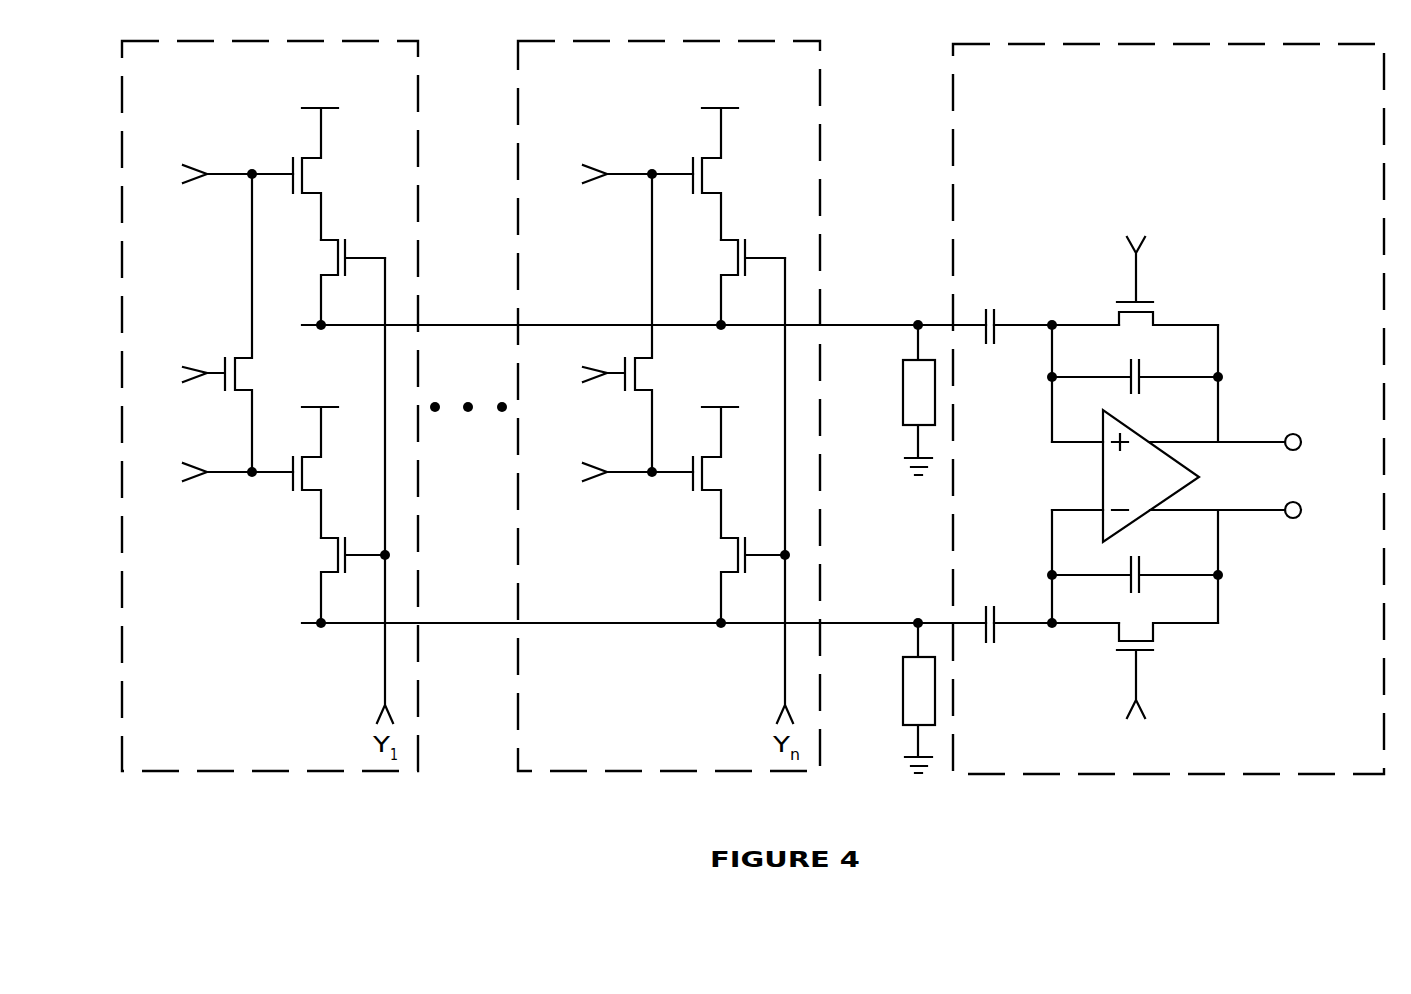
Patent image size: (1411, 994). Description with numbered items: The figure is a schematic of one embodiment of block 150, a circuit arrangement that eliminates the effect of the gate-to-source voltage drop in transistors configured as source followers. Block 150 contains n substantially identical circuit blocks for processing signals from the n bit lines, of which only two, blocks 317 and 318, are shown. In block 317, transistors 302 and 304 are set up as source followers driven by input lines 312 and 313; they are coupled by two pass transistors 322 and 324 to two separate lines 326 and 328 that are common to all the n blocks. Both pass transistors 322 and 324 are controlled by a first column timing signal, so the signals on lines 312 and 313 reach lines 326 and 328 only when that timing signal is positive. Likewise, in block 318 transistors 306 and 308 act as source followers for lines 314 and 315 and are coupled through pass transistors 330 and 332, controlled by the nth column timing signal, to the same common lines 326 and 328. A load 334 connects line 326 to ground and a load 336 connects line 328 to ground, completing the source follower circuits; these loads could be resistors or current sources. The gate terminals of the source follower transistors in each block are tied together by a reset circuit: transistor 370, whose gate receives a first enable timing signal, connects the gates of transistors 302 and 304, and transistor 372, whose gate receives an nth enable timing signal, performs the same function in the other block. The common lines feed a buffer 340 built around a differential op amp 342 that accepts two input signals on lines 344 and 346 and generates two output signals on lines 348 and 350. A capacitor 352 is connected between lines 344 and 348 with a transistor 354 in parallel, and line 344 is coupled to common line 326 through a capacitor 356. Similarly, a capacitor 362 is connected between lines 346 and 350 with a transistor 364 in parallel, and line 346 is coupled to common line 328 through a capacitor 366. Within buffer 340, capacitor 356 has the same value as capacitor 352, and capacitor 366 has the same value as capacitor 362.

The block 150 is at (1300, 808).
The transistor 302 is at (293, 158).
The transistor 304 is at (293, 467).
The transistor 306 is at (693, 158).
The transistor 308 is at (693, 485).
The line 312 is at (220, 173).
The line 313 is at (218, 480).
The line 314 is at (620, 173).
The line 315 is at (618, 480).
The block 317 is at (360, 771).
The block 318 is at (760, 771).
The pass transistor 322 is at (327, 240).
The pass transistor 324 is at (320, 550).
The common line 326 is at (455, 323).
The common line 328 is at (455, 621).
The pass transistor 330 is at (743, 250).
The pass transistor 332 is at (747, 550).
The load 334 is at (903, 392).
The load 336 is at (903, 682).
The buffer 340 is at (1135, 774).
The differential op amp 342 is at (1128, 422).
The line 344 is at (1070, 442).
The line 346 is at (1070, 510).
The line 348 is at (1250, 442).
The line 350 is at (1250, 510).
The capacitor 352 is at (1142, 375).
The transistor 354 is at (1143, 300).
The capacitor 356 is at (997, 337).
The capacitor 362 is at (1142, 573).
The transistor 364 is at (1143, 655).
The capacitor 366 is at (997, 635).
The transistor 370 is at (240, 360).
The transistor 372 is at (640, 360).